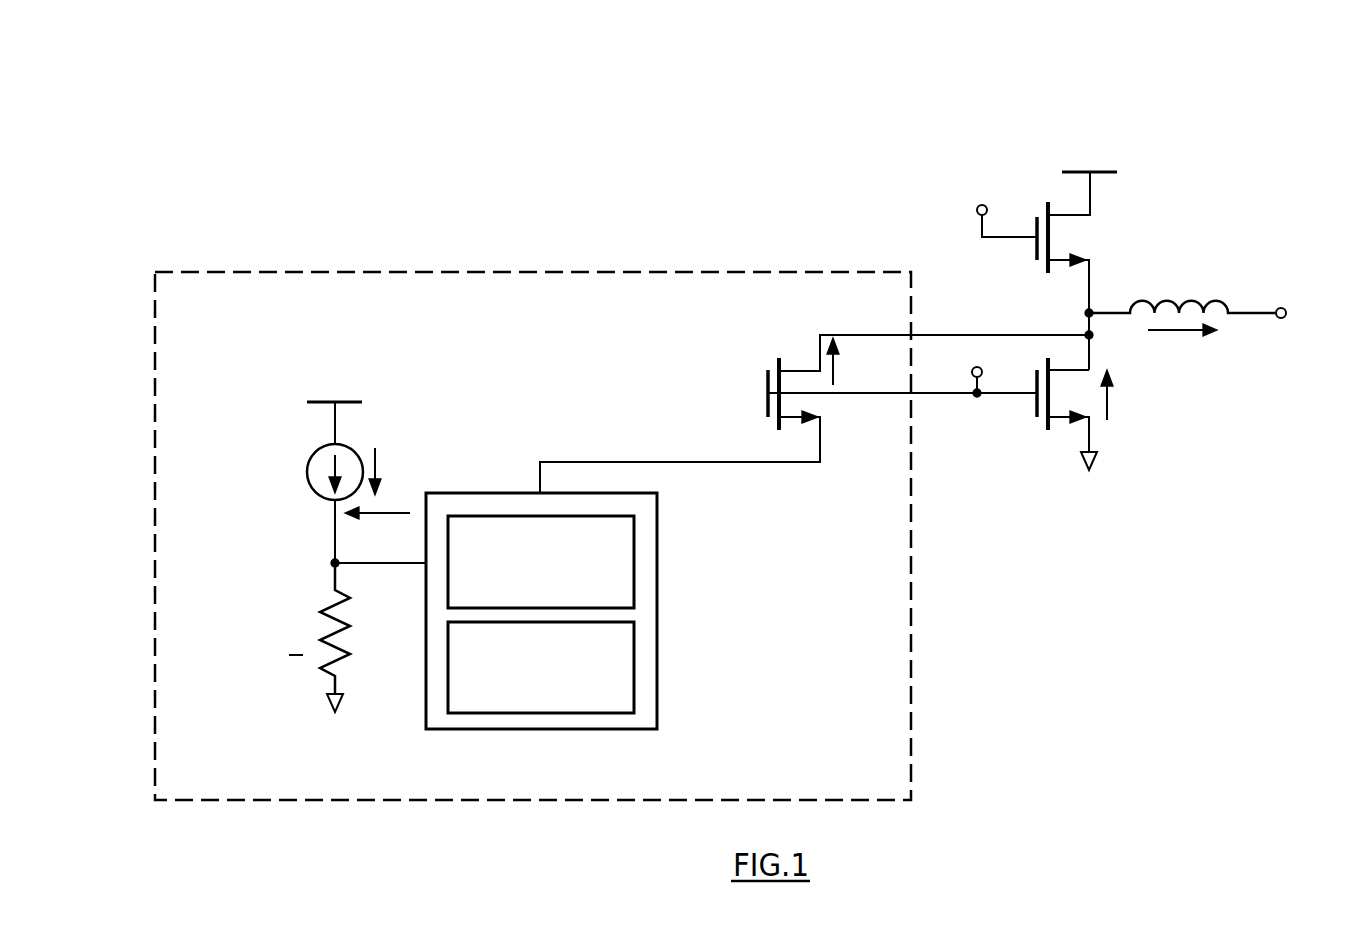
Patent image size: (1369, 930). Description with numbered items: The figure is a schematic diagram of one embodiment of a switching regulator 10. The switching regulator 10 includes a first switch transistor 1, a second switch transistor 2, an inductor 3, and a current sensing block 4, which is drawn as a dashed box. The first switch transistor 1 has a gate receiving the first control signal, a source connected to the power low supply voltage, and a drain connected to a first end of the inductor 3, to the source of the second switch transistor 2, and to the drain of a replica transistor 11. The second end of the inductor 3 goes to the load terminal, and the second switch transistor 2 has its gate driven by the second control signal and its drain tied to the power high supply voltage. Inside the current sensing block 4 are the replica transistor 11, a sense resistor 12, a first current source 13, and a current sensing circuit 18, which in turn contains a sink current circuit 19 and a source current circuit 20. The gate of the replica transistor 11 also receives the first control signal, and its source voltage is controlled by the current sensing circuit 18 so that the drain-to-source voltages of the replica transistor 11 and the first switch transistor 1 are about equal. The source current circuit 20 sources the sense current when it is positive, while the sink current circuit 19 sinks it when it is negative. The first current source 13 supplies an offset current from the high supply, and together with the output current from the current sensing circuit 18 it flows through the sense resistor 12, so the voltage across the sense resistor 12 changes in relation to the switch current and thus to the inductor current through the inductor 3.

The first switch transistor 1 is at (1036, 405).
The second switch transistor 2 is at (1036, 248).
The inductor 3 is at (1196, 300).
The current sensing block 4 is at (208, 272).
The switching regulator 10 is at (1232, 98).
The replica transistor 11 is at (768, 406).
The sense resistor 12 is at (345, 603).
The first current source 13 is at (316, 453).
The current sensing circuit 18 is at (523, 587).
The sink current circuit 19 is at (634, 585).
The source current circuit 20 is at (634, 657).